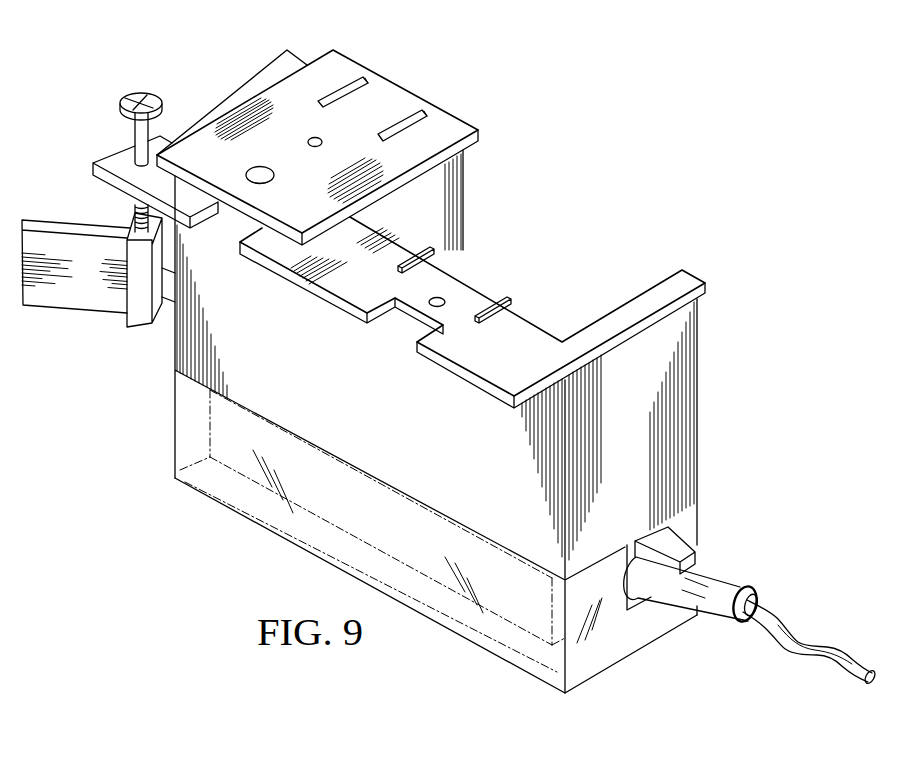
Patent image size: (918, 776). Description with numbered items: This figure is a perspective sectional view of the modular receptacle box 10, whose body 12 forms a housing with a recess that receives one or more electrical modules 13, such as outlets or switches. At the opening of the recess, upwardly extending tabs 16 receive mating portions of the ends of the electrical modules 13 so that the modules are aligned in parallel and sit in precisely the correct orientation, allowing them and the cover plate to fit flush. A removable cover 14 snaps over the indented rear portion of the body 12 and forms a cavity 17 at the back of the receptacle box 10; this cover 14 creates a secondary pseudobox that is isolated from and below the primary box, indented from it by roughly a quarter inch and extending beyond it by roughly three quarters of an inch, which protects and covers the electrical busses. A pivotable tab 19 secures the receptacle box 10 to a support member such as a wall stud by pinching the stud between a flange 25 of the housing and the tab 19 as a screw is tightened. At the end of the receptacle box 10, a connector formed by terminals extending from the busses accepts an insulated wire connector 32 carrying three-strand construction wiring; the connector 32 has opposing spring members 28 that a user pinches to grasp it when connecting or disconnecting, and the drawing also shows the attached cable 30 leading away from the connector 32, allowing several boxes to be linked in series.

The modular receptacle box 10 is at (600, 104).
The body 12 is at (699, 395).
The electrical module 13 is at (275, 90).
The removable cover 14 is at (175, 458).
The upwardly extending tabs 16 is at (427, 260).
The cavity 17 is at (588, 660).
The pivotable tab 19 is at (58, 222).
The flange 25 is at (705, 297).
The spring members 28 is at (684, 552).
The cable 30 is at (850, 684).
The insulated wire connector 32 is at (718, 618).